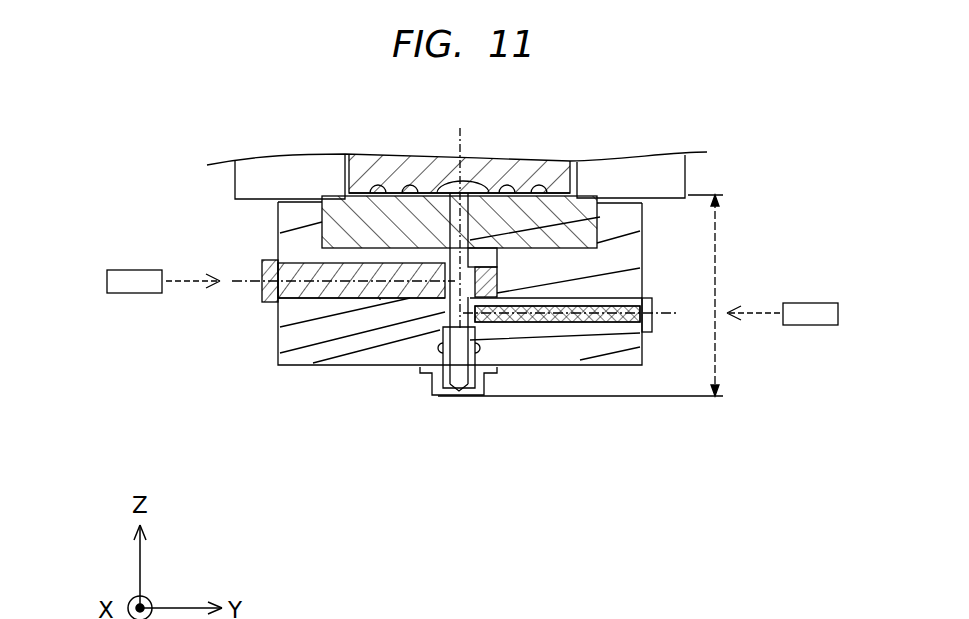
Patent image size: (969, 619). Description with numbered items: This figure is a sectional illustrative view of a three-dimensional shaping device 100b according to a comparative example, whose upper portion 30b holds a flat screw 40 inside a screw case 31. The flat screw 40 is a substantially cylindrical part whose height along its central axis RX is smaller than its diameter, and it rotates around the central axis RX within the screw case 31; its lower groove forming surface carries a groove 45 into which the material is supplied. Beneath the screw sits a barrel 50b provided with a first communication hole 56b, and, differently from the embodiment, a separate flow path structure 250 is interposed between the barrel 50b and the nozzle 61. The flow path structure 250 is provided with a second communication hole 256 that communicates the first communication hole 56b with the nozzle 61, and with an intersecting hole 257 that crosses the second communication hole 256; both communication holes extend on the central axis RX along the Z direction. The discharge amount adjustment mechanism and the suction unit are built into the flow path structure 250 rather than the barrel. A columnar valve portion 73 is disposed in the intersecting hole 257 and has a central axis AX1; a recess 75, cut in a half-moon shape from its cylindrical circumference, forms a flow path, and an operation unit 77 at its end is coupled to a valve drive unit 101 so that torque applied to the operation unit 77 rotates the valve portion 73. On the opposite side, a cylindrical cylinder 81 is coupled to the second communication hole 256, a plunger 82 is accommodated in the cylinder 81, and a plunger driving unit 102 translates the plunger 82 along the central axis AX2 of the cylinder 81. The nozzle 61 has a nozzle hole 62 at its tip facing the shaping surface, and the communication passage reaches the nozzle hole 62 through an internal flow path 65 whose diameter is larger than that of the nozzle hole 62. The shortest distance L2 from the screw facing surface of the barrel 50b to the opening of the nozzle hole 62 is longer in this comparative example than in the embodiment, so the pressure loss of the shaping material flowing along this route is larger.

The three-dimensional shaping device 100b is at (176, 106).
The table portion 30b is at (743, 133).
The screw case 31 is at (688, 178).
The flat screw 40 is at (388, 162).
The groove 45 is at (408, 160).
The recess 75 is at (464, 184).
The barrel 50b is at (322, 227).
The first communication hole 56b is at (600, 217).
The second communication hole 256 is at (498, 270).
The valve portion 73 is at (323, 347).
The operation unit 77 is at (256, 270).
The valve drive unit 101 is at (135, 270).
The plunger driving unit 102 is at (805, 303).
The flow path structure 250 is at (317, 298).
The intersecting hole 257 is at (378, 298).
The cylinder 81 is at (593, 327).
The plunger 82 is at (567, 327).
The nozzle 61 is at (483, 372).
The nozzle hole 62 is at (460, 395).
The internal flow path 65 is at (478, 360).
The central axis AX1 is at (250, 283).
The central axis AX2 is at (663, 318).
The central axis RX is at (465, 128).
The shortest distance L2 is at (595, 295).